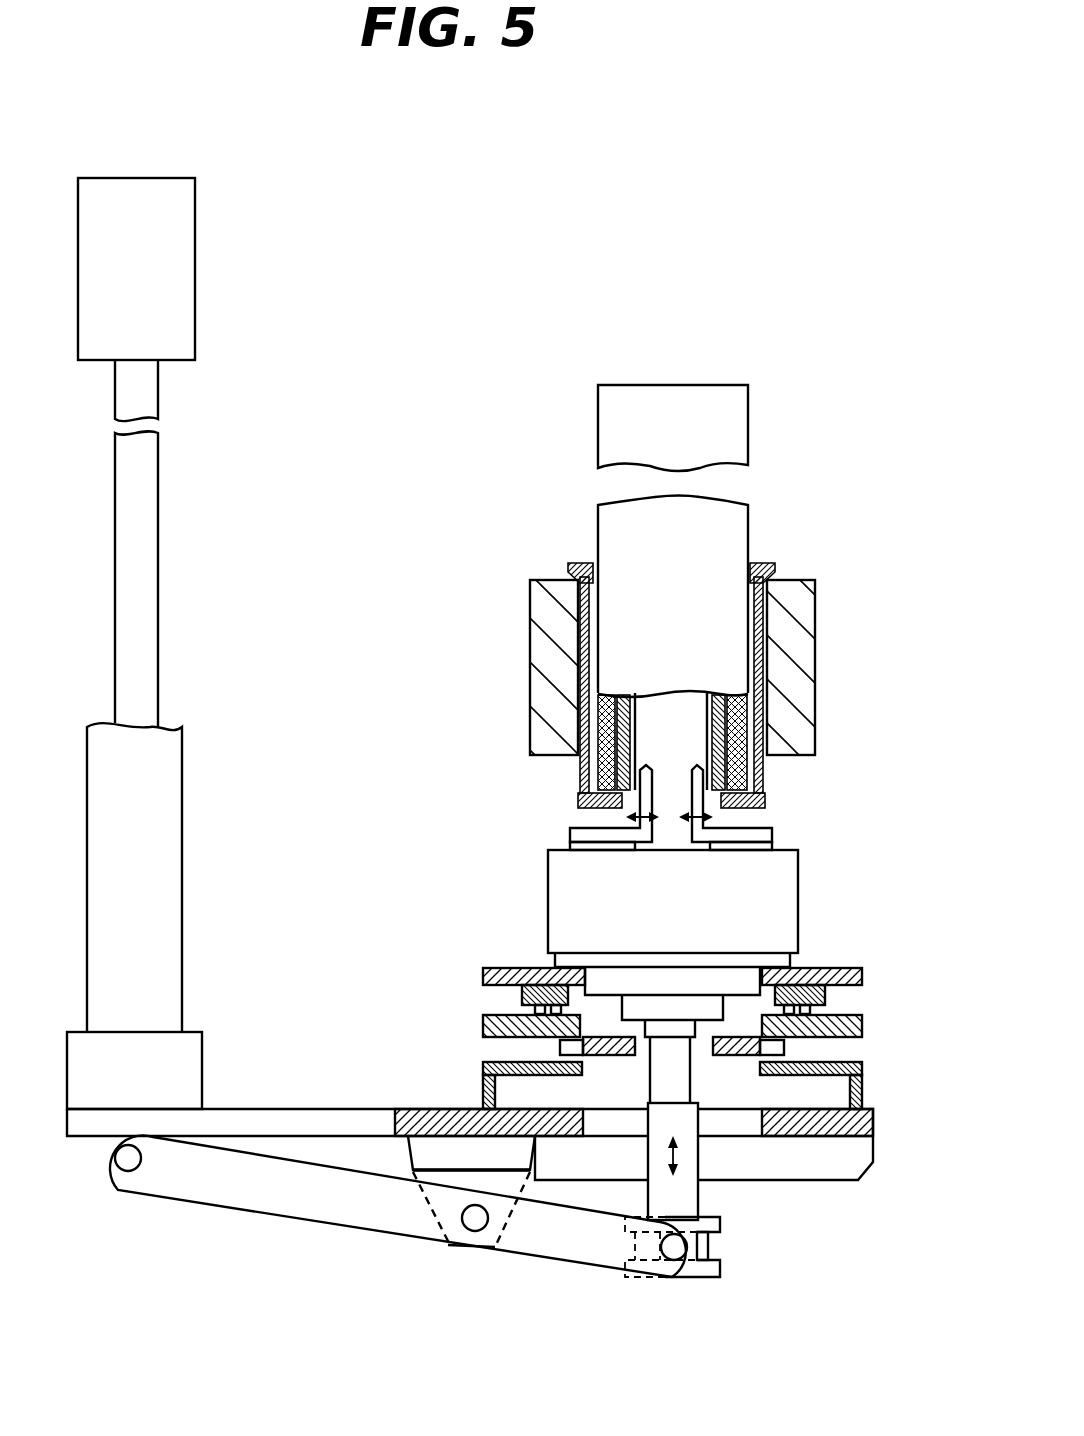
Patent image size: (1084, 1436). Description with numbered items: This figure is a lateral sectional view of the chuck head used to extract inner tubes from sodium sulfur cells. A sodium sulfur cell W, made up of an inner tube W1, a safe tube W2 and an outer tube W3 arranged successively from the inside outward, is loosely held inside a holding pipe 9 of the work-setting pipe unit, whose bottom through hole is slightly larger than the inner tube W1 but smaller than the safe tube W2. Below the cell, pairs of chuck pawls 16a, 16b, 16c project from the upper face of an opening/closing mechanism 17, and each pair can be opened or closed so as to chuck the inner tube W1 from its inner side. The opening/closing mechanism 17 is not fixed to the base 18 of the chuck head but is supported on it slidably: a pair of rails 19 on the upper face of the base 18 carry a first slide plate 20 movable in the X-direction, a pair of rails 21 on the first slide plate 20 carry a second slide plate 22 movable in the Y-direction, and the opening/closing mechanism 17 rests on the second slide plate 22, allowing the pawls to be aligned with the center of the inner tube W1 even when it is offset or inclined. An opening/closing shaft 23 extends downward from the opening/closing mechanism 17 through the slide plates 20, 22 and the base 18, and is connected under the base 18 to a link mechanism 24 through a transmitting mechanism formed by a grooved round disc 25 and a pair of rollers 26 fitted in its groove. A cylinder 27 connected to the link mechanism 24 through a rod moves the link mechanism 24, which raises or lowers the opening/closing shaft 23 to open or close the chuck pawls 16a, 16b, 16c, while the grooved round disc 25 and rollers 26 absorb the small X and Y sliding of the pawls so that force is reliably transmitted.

The holding pipe 9 is at (765, 780).
The chuck pawl 16a is at (589, 791).
The chuck pawl 16b is at (611, 807).
The chuck pawl 16c is at (732, 807).
The opening/closing mechanism 17 is at (800, 868).
The base 18 is at (873, 1128).
The rails 19 is at (785, 1050).
The first slide plate 20 is at (862, 1020).
The rails 21 is at (825, 1000).
The second slide plate 22 is at (833, 968).
The opening/closing shaft 23 is at (685, 1193).
The link mechanism 24 is at (540, 1240).
The grooved round disc 25 is at (720, 1268).
The rollers 26 is at (677, 1250).
The cylinder 27 is at (183, 311).
The sodium sulfur cell W is at (700, 403).
The inner tube W1 is at (650, 693).
The safe tube W2 is at (614, 693).
The outer tube W3 is at (602, 693).